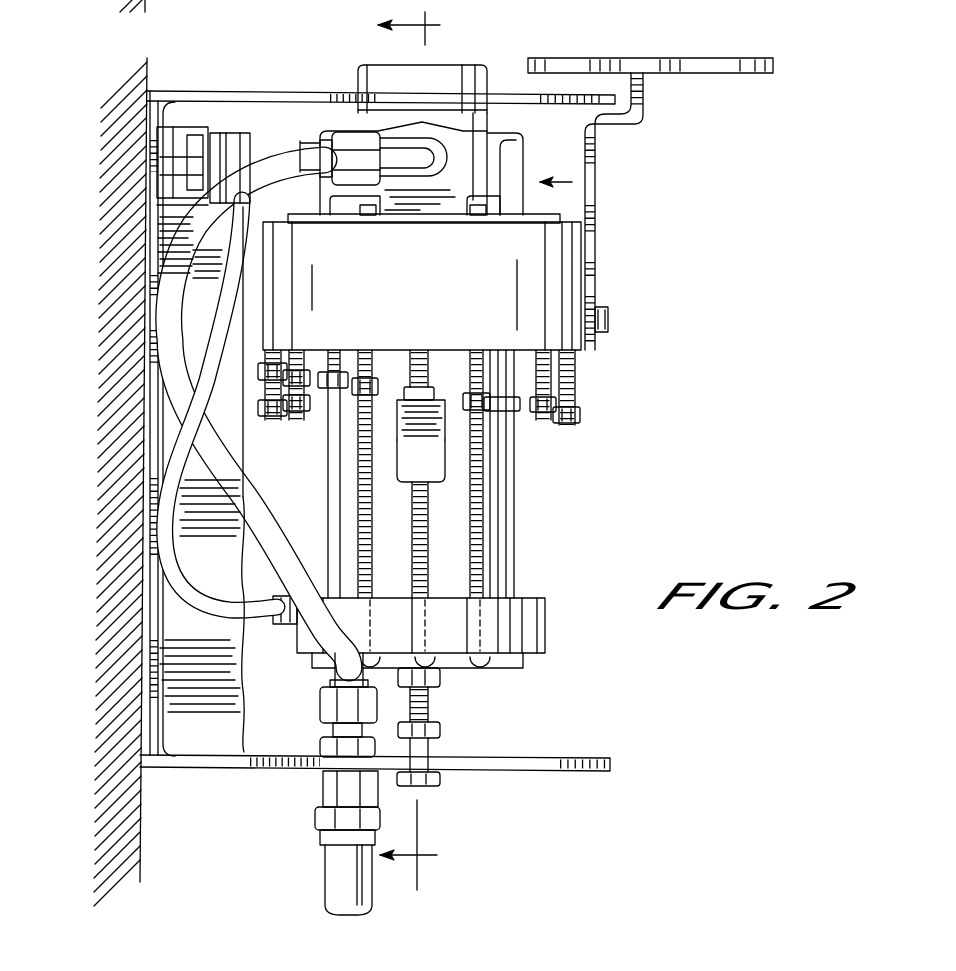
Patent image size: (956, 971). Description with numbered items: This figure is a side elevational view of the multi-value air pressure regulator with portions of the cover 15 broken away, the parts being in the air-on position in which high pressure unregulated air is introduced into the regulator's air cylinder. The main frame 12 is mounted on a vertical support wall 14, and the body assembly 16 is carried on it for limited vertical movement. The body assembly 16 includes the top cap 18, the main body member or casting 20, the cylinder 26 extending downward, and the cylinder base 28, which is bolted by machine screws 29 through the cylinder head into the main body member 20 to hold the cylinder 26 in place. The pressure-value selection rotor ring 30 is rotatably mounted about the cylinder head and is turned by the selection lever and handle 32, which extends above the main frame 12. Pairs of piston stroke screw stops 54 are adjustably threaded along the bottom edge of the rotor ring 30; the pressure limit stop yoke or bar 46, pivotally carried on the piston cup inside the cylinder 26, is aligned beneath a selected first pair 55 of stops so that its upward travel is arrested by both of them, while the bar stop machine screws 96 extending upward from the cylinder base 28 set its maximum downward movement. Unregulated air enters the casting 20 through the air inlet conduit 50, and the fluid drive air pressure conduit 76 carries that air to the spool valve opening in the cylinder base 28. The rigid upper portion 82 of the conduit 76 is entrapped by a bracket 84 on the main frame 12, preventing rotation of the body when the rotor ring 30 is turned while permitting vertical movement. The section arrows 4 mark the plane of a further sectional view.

The section line 4- 4 is at (426, 451).
The main frame 12 is at (210, 92).
The vertical support wall 14 is at (148, 80).
The cover 15 is at (225, 722).
The body assembly 16 is at (600, 168).
The top cap 18 is at (358, 78).
The main body member 20 is at (515, 210).
The cylinder 26 is at (506, 556).
The cylinder base 28 is at (525, 623).
The machine screws 29 is at (358, 478).
The pressure-value selection rotor ring 30 is at (535, 285).
The selection lever and handle 32 is at (678, 74).
The pressure limit stop yoke or bar 46 is at (440, 452).
The air inlet conduit 50 is at (288, 168).
The piston stroke screw stops 54 is at (575, 402).
The first pair of piston stroke screw stops 55 is at (428, 405).
The fluid drive air pressure conduit 76 is at (190, 580).
The upper portion of fluid drive pressure conduit 82 is at (235, 140).
The bracket 84 is at (182, 137).
The yoke or bar stop machine screws 96 is at (425, 578).